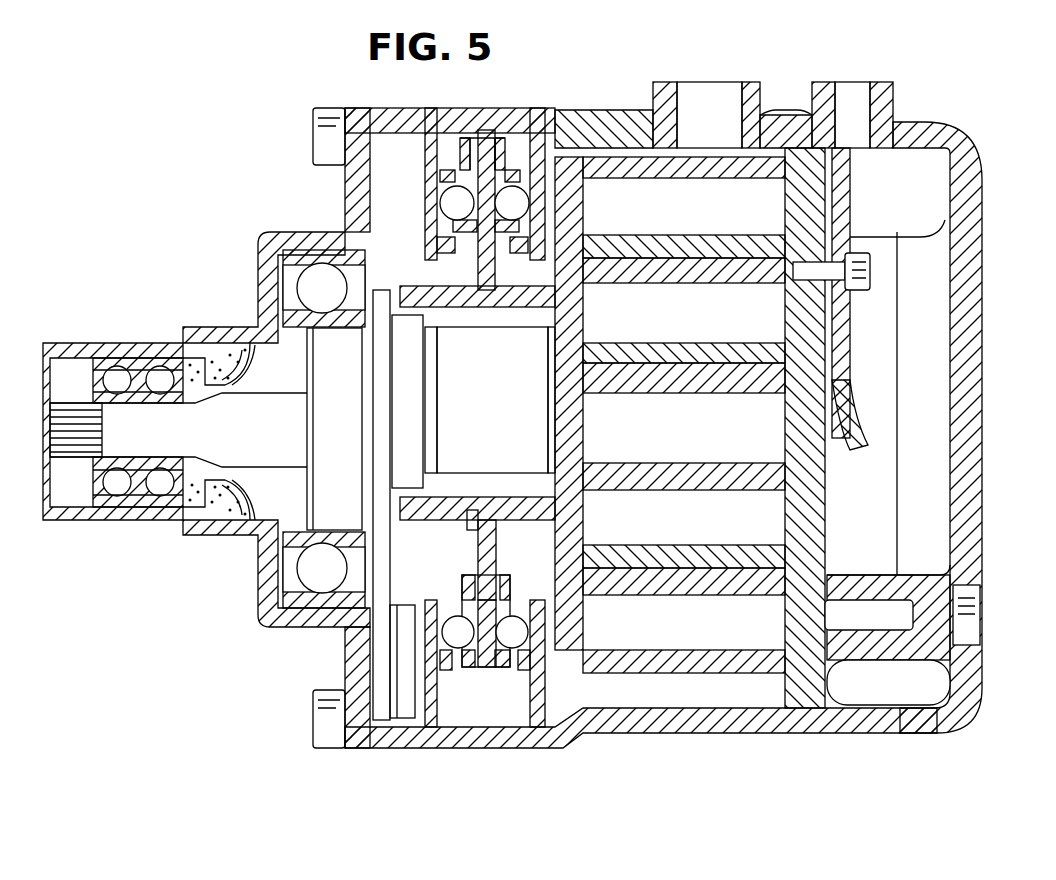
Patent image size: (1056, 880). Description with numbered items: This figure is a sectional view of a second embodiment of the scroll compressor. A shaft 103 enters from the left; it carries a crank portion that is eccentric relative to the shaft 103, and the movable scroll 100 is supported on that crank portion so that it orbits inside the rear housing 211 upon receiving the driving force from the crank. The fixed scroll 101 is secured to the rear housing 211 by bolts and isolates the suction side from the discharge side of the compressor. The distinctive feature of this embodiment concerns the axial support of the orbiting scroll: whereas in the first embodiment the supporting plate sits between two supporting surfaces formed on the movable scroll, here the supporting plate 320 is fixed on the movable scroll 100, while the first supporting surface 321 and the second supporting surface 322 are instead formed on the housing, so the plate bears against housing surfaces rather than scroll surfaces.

The movable scroll 100 is at (628, 165).
The fixed scroll 101 is at (808, 207).
The shaft 103 is at (248, 438).
The rear housing 211 is at (748, 722).
The supporting plate 320 is at (482, 665).
The first supporting surface 321 is at (512, 672).
The second supporting surface 322 is at (452, 660).